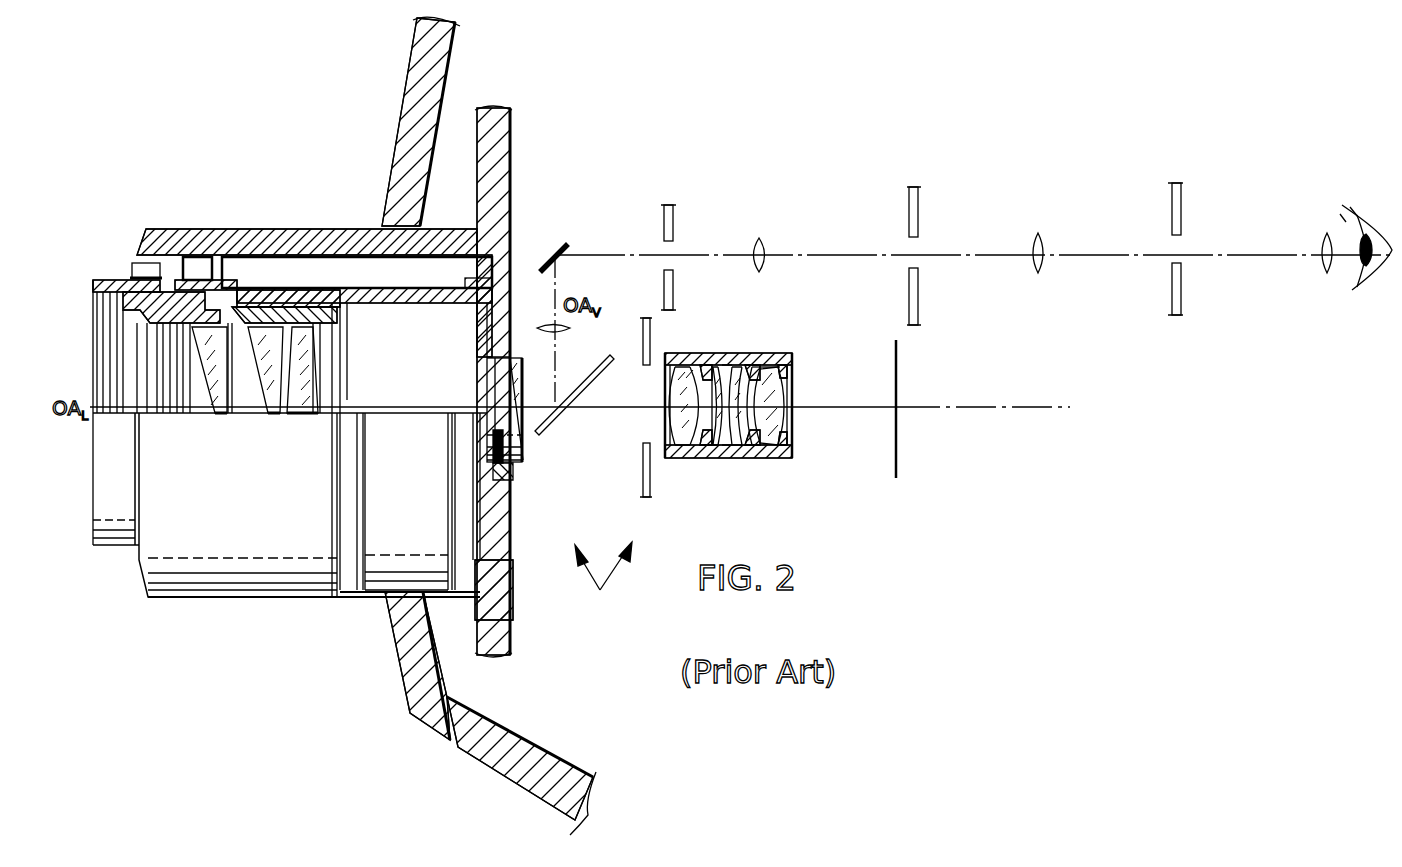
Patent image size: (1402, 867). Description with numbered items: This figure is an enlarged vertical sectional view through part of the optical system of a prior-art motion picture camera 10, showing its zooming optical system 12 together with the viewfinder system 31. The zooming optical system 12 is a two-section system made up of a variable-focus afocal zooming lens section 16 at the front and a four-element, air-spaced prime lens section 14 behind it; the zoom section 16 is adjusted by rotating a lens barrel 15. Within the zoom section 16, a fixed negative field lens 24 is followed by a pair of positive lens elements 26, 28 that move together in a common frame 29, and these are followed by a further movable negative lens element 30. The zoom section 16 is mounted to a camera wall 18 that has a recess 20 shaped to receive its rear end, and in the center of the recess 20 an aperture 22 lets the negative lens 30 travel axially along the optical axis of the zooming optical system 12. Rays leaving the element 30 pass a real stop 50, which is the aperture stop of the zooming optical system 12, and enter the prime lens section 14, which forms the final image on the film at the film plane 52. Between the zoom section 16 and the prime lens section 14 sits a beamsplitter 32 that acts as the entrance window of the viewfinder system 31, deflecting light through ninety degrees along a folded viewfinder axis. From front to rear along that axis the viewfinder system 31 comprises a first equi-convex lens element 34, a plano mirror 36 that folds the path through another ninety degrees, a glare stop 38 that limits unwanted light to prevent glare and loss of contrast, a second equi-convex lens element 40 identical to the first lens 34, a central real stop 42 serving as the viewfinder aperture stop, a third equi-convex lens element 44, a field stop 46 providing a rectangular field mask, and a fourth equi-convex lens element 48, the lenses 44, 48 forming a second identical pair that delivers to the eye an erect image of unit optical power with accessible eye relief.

The motion picture camera 10 is at (378, 118).
The zooming optical system 12 is at (603, 583).
The prime lens section 14 is at (800, 345).
The lens barrel 15 is at (283, 228).
The zooming lens section 16 is at (216, 218).
The camera wall 18 is at (508, 165).
The recess 20 is at (482, 267).
The aperture 22 is at (503, 468).
The fixed negative field lens 24 is at (212, 413).
The positive lens element 26 is at (268, 413).
The positive lens element 28 is at (303, 413).
The common frame 29 is at (283, 315).
The negative lens element 30 is at (505, 385).
The viewfinder system 31 is at (935, 158).
The beamsplitter 32 is at (545, 420).
The first equi-convex lens element 34 is at (543, 327).
The plano mirror 36 is at (548, 257).
The glare stop 38 is at (673, 222).
The second equi-convex lens element 40 is at (764, 250).
The central real stop 42 is at (920, 222).
The third equi-convex lens element 44 is at (1044, 246).
The field stop 46 is at (1181, 226).
The fourth equi-convex lens element 48 is at (1322, 243).
The real stop 50 is at (645, 478).
The film plane 52 is at (898, 380).